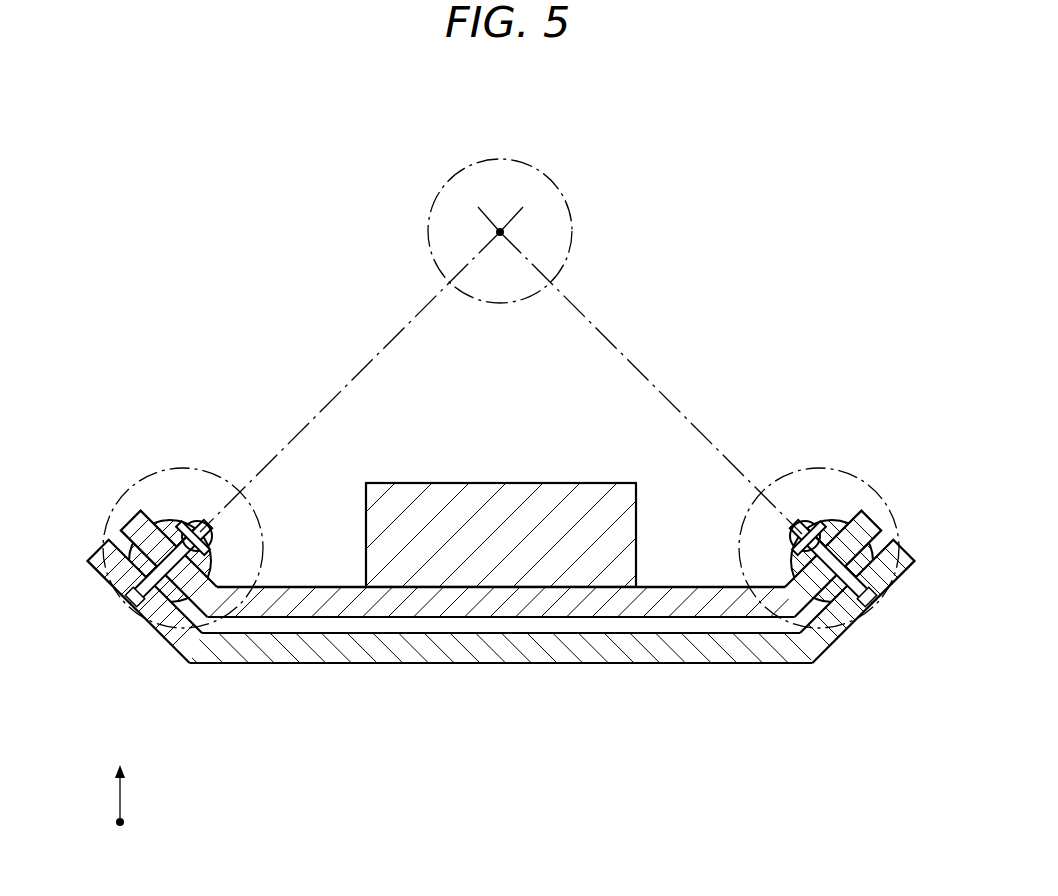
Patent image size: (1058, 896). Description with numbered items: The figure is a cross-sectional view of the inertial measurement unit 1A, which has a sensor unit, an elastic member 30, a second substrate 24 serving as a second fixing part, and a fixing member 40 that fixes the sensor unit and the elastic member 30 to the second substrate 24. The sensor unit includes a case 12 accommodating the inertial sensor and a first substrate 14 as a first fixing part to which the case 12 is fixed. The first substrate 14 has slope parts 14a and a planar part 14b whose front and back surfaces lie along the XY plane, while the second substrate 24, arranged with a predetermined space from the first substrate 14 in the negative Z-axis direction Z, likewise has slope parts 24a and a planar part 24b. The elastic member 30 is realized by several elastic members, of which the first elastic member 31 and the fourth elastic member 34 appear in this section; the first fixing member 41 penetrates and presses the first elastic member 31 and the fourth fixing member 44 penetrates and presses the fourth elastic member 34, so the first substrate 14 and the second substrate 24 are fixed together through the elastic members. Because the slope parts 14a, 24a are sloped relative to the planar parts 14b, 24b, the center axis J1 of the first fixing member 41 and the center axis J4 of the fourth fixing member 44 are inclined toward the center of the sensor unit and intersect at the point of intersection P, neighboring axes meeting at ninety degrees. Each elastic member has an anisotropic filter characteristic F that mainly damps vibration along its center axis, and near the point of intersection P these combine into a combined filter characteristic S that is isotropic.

The inertial measurement unit 1A is at (795, 299).
The case 12 is at (514, 552).
The first substrate 14 is at (639, 608).
The slope parts 14a is at (135, 521).
The planar part 14b is at (568, 608).
The second substrate 24 is at (447, 657).
The slope parts 24a is at (99, 557).
The planar part 24b is at (377, 657).
The elastic member 30 is at (154, 420).
The first elastic member 31 is at (157, 508).
The fourth elastic member 34 is at (844, 508).
The fixing member 40 is at (211, 418).
The first fixing member 41 is at (203, 508).
The fourth fixing member 44 is at (799, 508).
The center axis J1 is at (361, 369).
The center axis J4 is at (640, 370).
The combined filter characteristic S is at (479, 159).
The point of intersection P is at (505, 234).
The anisotropic filter characteristic F is at (264, 527).
The Z-axis Z is at (119, 781).